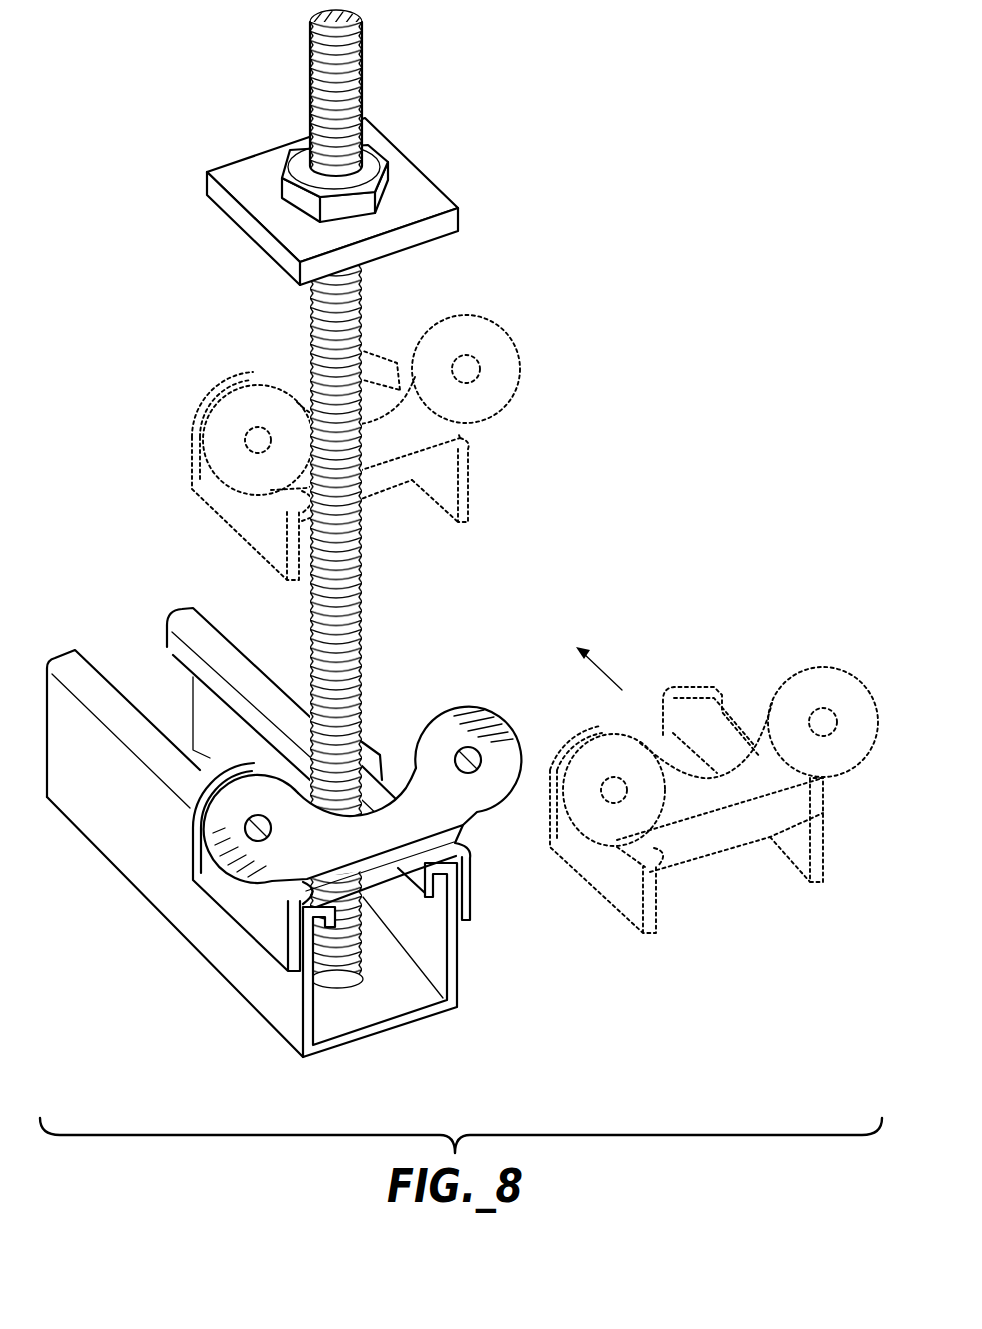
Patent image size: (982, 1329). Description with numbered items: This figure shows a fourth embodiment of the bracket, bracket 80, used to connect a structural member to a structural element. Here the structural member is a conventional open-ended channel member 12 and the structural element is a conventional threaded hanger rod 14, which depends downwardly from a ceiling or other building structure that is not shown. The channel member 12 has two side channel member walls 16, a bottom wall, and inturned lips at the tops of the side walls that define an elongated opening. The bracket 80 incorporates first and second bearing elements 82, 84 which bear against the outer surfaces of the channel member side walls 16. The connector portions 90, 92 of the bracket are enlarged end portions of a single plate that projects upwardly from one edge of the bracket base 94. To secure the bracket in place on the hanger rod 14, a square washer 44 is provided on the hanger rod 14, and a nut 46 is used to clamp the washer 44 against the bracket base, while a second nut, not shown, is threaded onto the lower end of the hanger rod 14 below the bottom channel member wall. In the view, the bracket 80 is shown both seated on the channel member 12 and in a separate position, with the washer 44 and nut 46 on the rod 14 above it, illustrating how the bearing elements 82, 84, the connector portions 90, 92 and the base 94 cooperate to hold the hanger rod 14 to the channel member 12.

The open-ended channel member 12 is at (187, 941).
The threaded hanger rod 14 is at (404, 653).
The side channel member walls 16 is at (460, 968).
The square washer 44 is at (428, 200).
The nut 46 is at (372, 160).
The bracket 80 is at (505, 338).
The first bearing element 82 is at (210, 492).
The second bearing element 84 is at (468, 508).
The connector portion 90 is at (213, 812).
The connector portion 92 is at (840, 683).
The bracket base 94 is at (383, 748).